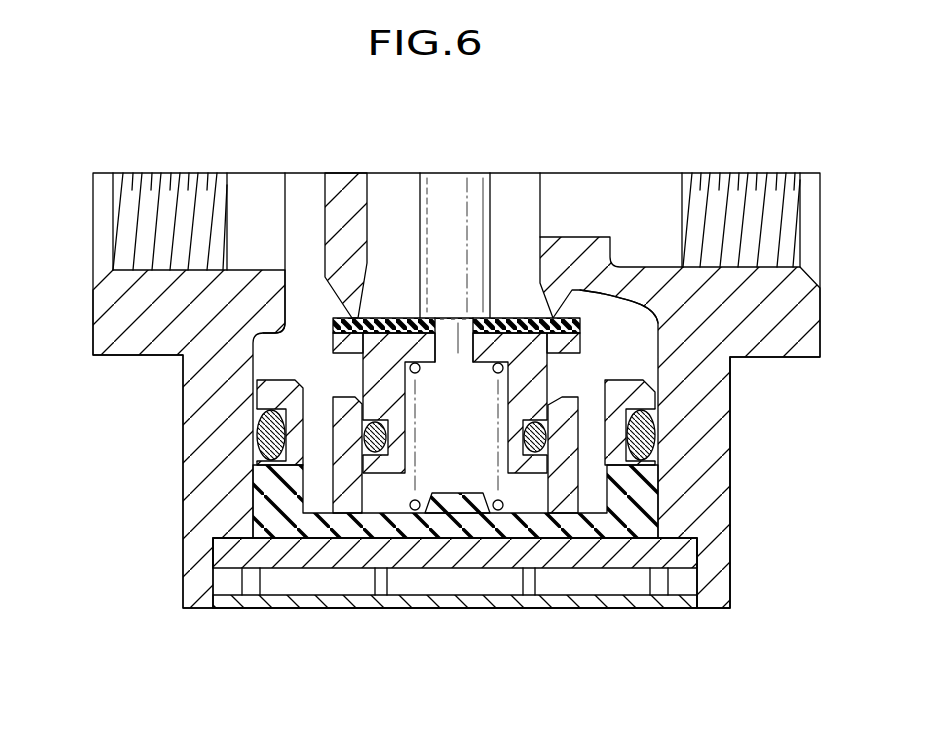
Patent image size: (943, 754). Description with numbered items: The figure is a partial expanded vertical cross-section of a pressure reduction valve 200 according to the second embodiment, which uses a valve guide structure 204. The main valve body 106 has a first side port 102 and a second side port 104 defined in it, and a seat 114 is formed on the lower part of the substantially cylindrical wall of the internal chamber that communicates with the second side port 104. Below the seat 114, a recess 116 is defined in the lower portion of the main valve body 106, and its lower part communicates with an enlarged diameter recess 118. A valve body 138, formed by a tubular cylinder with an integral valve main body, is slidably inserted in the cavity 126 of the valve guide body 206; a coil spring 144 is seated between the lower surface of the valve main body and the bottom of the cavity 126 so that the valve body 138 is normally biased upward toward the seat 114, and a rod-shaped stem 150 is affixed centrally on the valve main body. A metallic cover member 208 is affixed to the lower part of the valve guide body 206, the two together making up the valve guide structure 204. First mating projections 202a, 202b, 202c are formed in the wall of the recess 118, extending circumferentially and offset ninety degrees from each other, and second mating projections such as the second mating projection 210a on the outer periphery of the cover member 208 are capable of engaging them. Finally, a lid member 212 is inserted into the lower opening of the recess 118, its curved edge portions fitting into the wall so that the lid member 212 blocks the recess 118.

The pressure reduction valve 200 is at (766, 98).
The first side port 102 is at (143, 243).
The second side port 104 is at (763, 268).
The main valve body 106 is at (822, 339).
The seat 114 is at (350, 297).
The recess 116 is at (658, 347).
The enlarged diameter recess 118 is at (697, 556).
The cavity 126 is at (367, 517).
The valve body 138 is at (330, 340).
The coil spring 144 is at (430, 503).
The stem 150 is at (477, 225).
The first mating projection 202a is at (223, 585).
The first mating projection 202b is at (397, 587).
The first mating projection 202c is at (683, 587).
The valve guide structure 204 is at (670, 692).
The valve guide body 206 is at (603, 547).
The cover member 208 is at (553, 577).
The second mating projection 210a is at (213, 558).
The lid member 212 is at (488, 613).